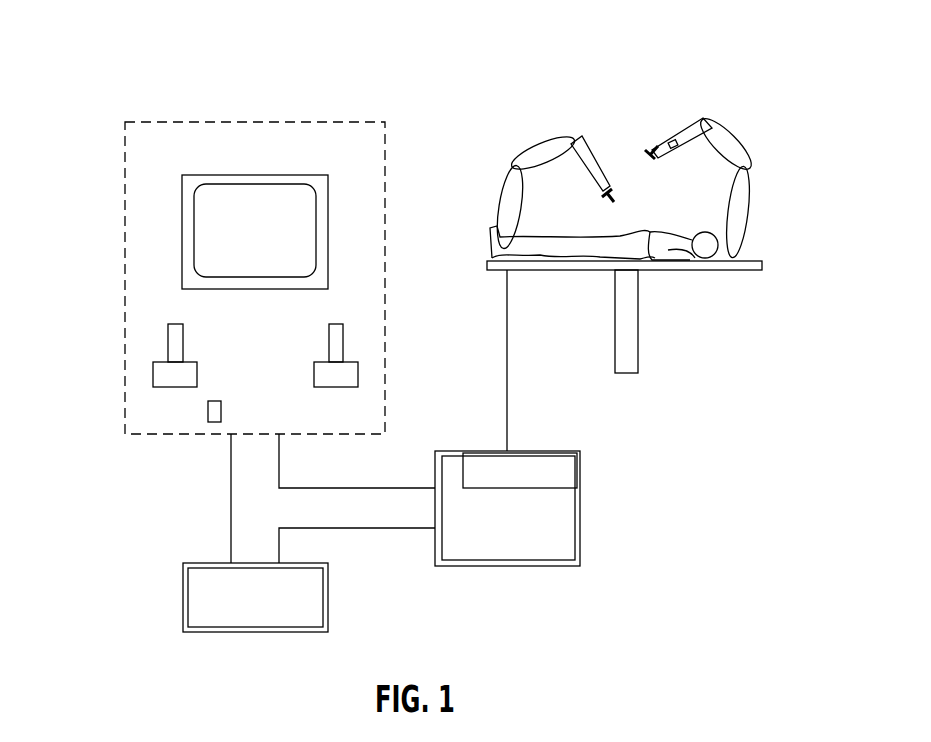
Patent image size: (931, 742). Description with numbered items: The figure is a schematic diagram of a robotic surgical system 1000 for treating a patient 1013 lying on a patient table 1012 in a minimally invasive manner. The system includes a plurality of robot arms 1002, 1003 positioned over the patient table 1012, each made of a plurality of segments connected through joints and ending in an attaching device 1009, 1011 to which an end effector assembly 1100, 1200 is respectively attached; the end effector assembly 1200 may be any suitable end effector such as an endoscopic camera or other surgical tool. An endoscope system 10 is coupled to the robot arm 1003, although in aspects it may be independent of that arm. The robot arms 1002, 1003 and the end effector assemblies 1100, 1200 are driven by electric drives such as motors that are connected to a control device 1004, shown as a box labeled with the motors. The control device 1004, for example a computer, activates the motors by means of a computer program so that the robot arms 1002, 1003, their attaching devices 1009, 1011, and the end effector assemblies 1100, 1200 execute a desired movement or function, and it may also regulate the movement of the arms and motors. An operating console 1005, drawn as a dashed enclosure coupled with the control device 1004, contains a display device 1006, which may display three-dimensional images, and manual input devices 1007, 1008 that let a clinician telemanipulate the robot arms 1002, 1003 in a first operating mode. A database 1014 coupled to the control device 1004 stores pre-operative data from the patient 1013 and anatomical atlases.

The robotic surgical system 1000 is at (633, 417).
The robot arm 1002 is at (527, 142).
The robot arm 1003 is at (733, 128).
The control device 1004 is at (538, 536).
The operating console 1005 is at (212, 92).
The display device 1006 is at (285, 246).
The manual input device 1007 is at (153, 374).
The manual input device 1008 is at (358, 375).
The attaching device 1009 is at (613, 187).
The attaching device 1011 is at (653, 148).
The patient table 1012 is at (572, 272).
The patient 1013 is at (670, 248).
The database 1014 is at (285, 611).
The endoscope system 10 is at (749, 177).
The end effector assembly 1100 is at (615, 185).
The end effector assembly 1200 is at (650, 150).